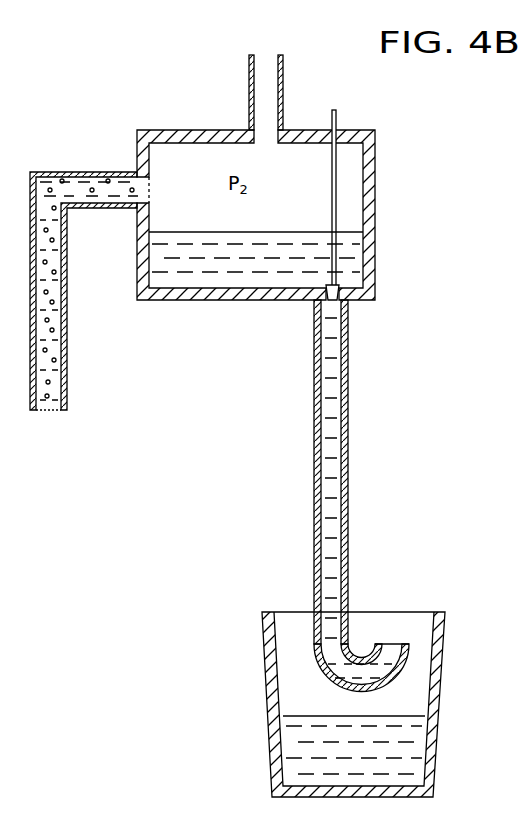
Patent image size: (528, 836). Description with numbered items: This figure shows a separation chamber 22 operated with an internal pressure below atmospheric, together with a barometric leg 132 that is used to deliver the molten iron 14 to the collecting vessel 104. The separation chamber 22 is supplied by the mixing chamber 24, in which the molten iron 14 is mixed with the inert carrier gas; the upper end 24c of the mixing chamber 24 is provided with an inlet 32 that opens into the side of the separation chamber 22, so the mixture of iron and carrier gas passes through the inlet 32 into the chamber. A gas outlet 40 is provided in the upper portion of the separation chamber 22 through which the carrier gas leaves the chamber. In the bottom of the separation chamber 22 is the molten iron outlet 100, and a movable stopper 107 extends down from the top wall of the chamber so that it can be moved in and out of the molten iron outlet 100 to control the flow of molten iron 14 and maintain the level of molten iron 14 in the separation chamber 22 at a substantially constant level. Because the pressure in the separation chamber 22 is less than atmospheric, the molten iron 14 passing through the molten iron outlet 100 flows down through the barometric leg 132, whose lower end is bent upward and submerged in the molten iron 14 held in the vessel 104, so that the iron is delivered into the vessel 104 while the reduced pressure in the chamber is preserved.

The separation chamber 22 is at (358, 131).
The gas outlet 40 is at (258, 143).
The inlet 32 is at (149, 190).
The stopper 107 is at (332, 207).
The molten iron outlet 100 is at (347, 300).
The upper end of mixing chamber 24c is at (76, 172).
The mixing chamber 24 is at (67, 370).
The barometric leg 132 is at (348, 480).
The collecting vessel 104 is at (445, 650).
The molten iron 14 is at (290, 285).